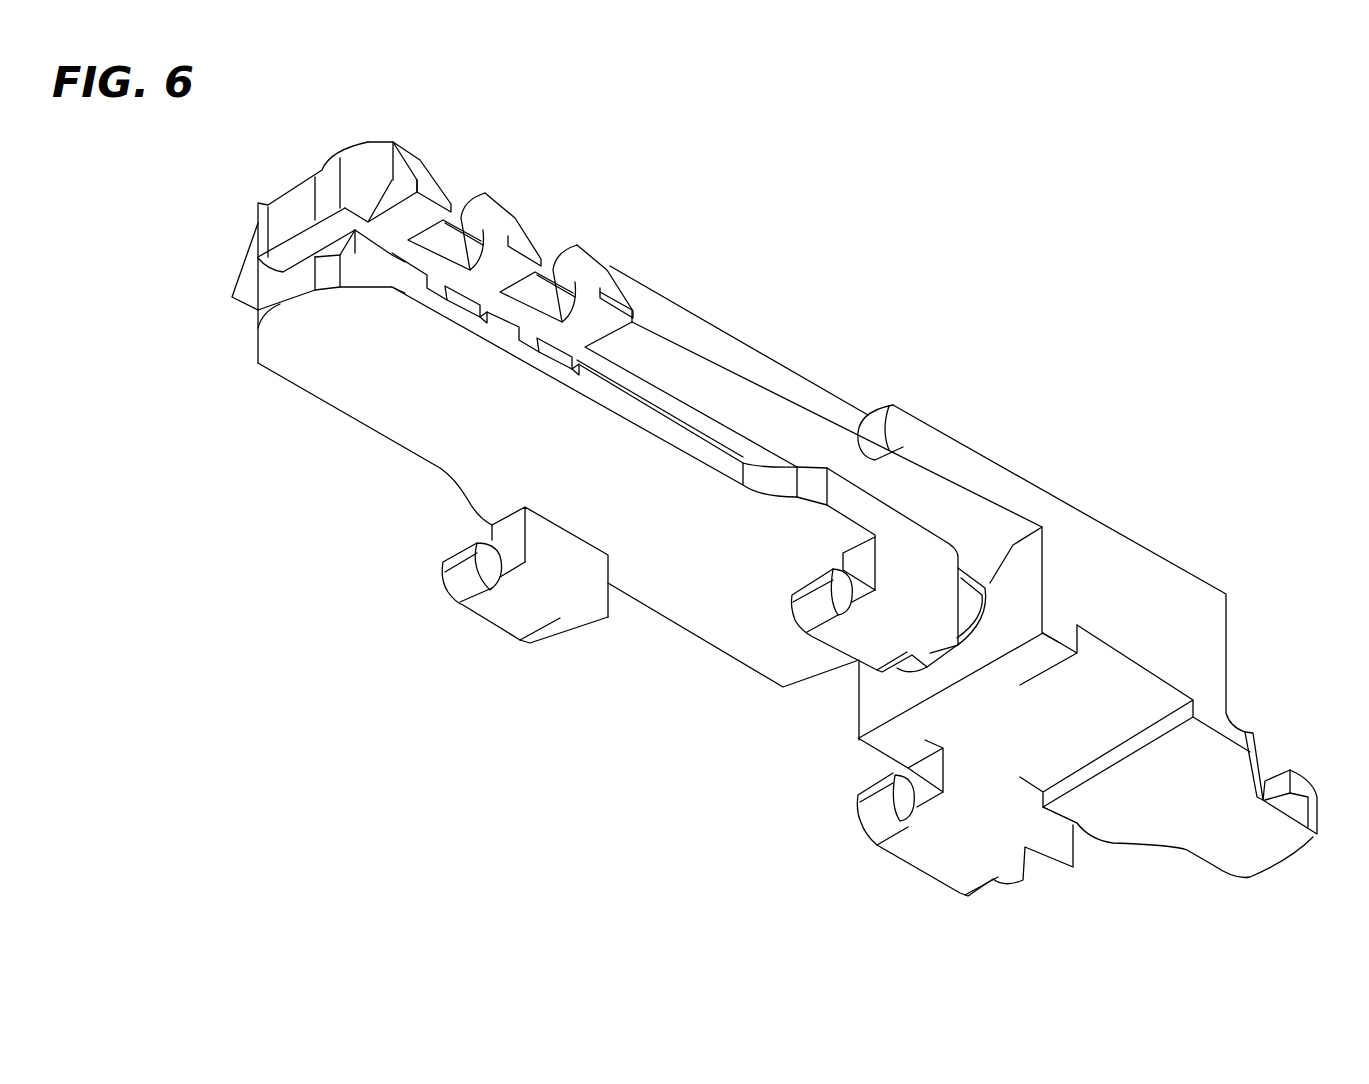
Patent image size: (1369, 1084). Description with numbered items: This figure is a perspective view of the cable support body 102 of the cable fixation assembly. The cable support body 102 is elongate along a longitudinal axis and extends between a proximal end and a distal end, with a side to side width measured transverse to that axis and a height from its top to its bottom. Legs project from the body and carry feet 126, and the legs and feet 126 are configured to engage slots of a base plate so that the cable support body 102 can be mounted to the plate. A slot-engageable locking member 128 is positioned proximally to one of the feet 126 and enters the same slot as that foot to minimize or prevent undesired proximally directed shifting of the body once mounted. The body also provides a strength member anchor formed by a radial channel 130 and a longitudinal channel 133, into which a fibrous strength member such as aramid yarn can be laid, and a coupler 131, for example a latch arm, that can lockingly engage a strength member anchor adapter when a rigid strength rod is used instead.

The cable support body 102 is at (794, 542).
The feet 126 is at (487, 560).
The slot-engageable locking member 128 is at (1062, 852).
The radial channel 130 is at (990, 607).
The coupler 131 is at (1297, 797).
The longitudinal channel 133 is at (710, 420).